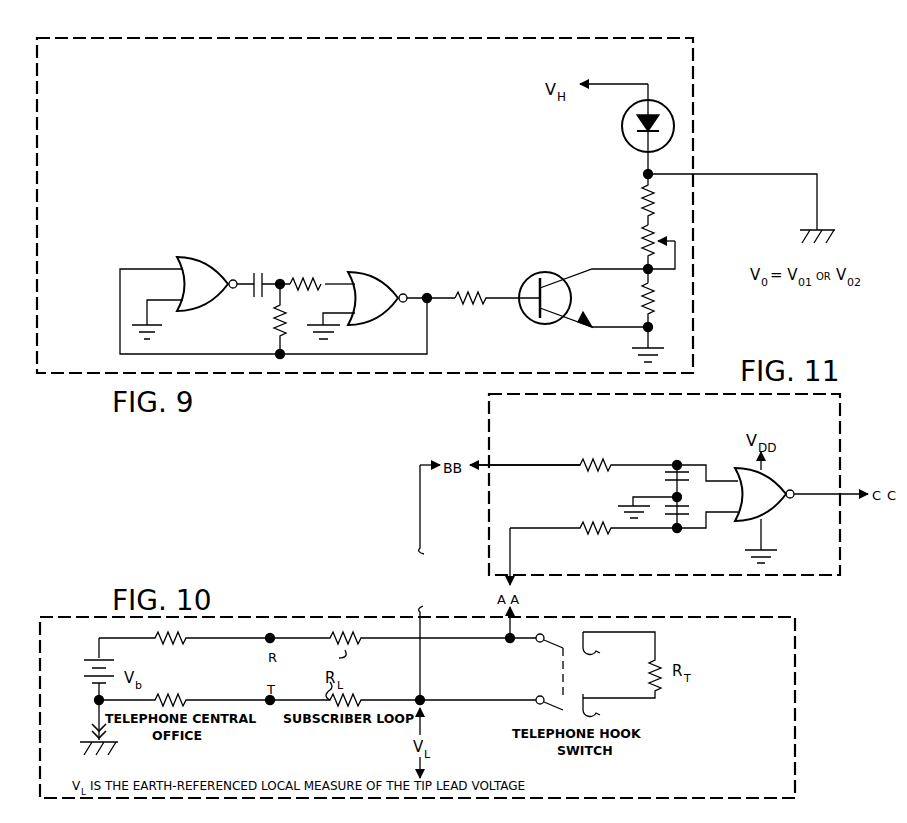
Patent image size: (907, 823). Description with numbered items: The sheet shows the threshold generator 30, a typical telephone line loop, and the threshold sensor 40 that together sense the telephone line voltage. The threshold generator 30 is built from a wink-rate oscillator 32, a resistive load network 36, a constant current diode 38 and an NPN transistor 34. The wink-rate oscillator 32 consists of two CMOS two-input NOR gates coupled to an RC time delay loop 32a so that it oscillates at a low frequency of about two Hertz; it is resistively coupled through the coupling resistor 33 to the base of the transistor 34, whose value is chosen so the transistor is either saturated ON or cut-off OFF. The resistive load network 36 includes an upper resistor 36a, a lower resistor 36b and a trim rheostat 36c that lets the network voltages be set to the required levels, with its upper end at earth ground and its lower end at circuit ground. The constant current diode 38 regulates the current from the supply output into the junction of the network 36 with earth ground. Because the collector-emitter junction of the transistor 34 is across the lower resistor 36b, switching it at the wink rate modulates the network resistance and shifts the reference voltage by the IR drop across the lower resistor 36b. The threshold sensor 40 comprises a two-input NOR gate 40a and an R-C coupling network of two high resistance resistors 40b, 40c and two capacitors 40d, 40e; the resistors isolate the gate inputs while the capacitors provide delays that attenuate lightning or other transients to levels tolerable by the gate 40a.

In FIG. 9, the threshold generator 30 is at (270, 172).
In FIG. 9, the wink-rate oscillator 32 is at (340, 266).
In FIG. 9, the RC time delay loop 32a is at (265, 278).
In FIG. 9, the coupling resistor 33 is at (494, 283).
In FIG. 9, the NPN transistor 34 is at (535, 277).
In FIG. 9, the resistive load network 36 is at (620, 185).
In FIG. 9, the upper resistor 36a is at (643, 200).
In FIG. 9, the lower resistor 36b is at (642, 297).
In FIG. 9, the trim rheostat 36c is at (640, 233).
In FIG. 9, the constant current diode 38 is at (622, 118).
In FIG. 11, the threshold sensor 40 is at (693, 445).
In FIG. 11, the two-input NOR gate 40a is at (748, 520).
In FIG. 11, the high resistance resistor 40b is at (578, 465).
In FIG. 11, the high resistance resistor 40c is at (578, 528).
In FIG. 11, the capacitor 40d is at (666, 471).
In FIG. 11, the capacitor 40e is at (668, 517).